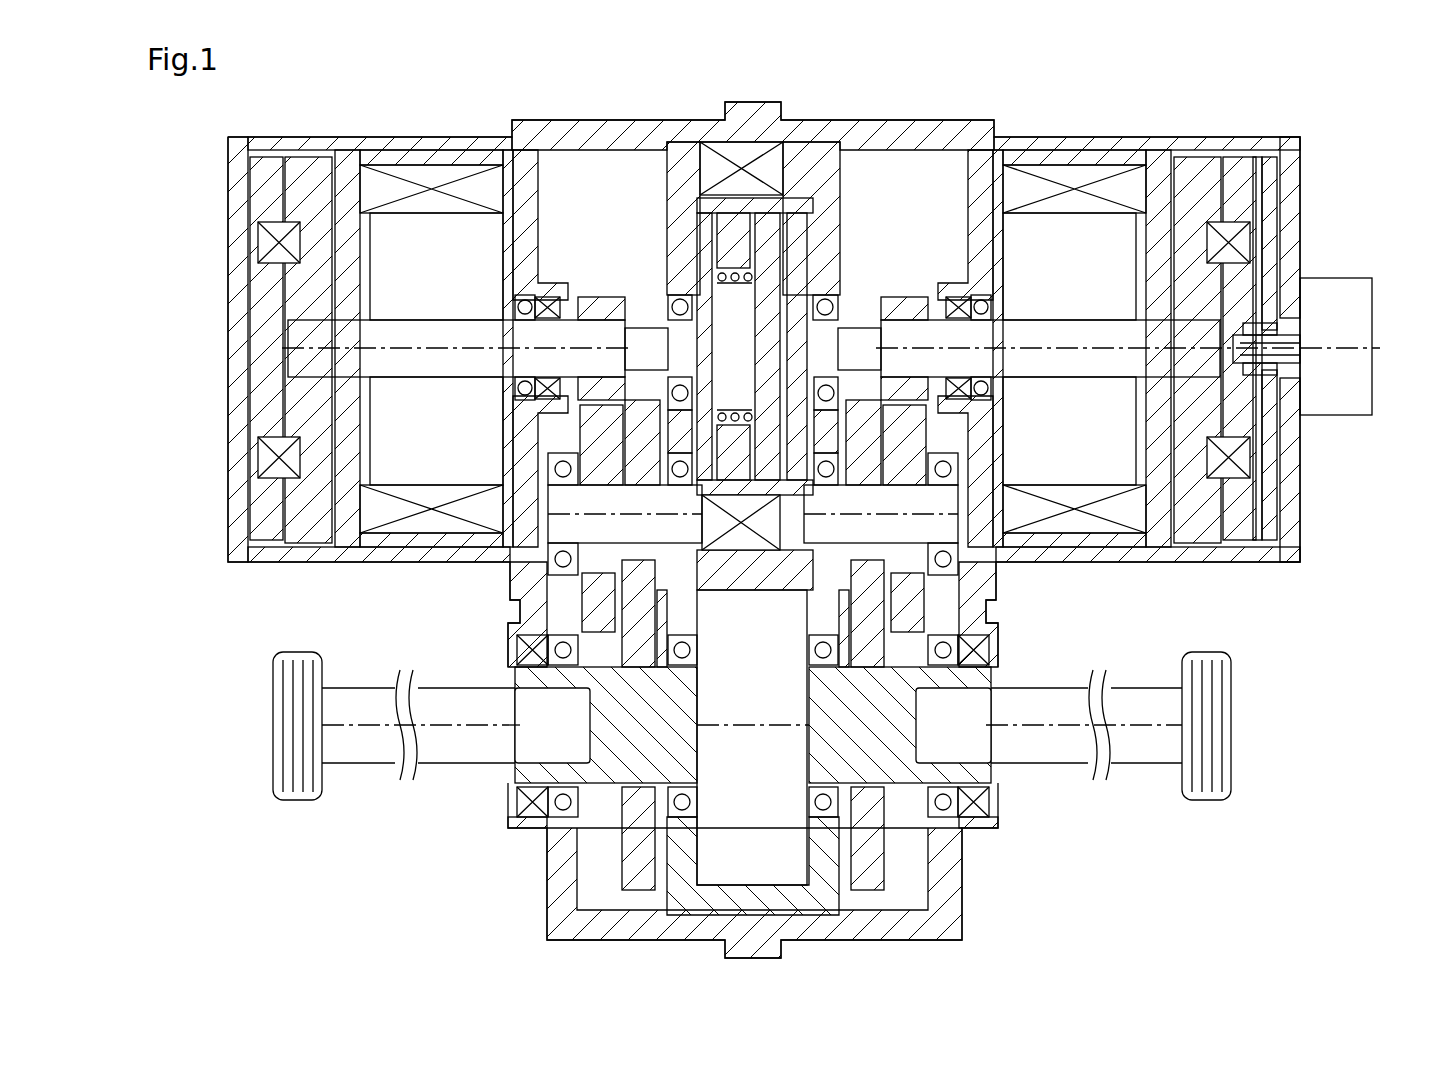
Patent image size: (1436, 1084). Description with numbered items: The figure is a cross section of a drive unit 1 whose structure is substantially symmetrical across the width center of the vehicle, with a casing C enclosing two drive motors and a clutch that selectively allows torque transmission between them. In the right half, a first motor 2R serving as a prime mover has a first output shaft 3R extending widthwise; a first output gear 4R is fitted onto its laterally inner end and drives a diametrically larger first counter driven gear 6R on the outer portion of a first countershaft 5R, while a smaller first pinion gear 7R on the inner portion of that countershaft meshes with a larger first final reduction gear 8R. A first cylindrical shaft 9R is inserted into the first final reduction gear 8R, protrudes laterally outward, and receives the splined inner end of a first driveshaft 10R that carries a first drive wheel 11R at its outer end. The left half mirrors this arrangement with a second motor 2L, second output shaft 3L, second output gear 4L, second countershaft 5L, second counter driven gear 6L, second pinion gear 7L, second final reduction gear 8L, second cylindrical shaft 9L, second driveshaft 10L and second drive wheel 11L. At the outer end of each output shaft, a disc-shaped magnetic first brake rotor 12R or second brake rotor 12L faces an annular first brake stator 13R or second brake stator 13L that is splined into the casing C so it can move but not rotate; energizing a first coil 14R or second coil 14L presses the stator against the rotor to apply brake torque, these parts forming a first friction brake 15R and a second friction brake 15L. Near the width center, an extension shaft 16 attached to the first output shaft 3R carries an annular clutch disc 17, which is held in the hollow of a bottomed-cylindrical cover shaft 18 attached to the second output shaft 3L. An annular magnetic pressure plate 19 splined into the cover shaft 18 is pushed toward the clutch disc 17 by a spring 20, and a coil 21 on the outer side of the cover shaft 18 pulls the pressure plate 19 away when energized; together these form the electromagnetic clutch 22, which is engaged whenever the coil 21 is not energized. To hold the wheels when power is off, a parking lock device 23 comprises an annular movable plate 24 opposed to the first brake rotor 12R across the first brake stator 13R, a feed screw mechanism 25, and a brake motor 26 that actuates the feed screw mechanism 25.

The drive unit 1 is at (385, 876).
The second motor 2L is at (437, 125).
The first motor 2R is at (1075, 126).
The second output shaft 3L is at (445, 318).
The first output shaft 3R is at (1068, 318).
The second output gear 4L is at (603, 298).
The first output gear 4R is at (905, 298).
The second countershaft 5L is at (565, 520).
The first countershaft 5R is at (940, 520).
The second counter driven gear 6L is at (590, 605).
The first counter driven gear 6R is at (905, 605).
The second pinion gear 7L is at (618, 460).
The first pinion gear 7R is at (868, 460).
The second final reduction gear 8L is at (628, 855).
The first final reduction gear 8R is at (878, 855).
The second cylindrical shaft 9L is at (510, 770).
The first cylindrical shaft 9R is at (980, 770).
The second driveshaft 10L is at (455, 696).
The first driveshaft 10R is at (1060, 696).
The second drive wheel 11L is at (297, 656).
The first drive wheel 11R is at (1205, 656).
The second brake rotor 12L is at (312, 163).
The first brake rotor 12R is at (1195, 158).
The second brake stator 13L is at (272, 160).
The first brake stator 13R is at (1240, 165).
The second coil 14L is at (262, 240).
The first coil 14R is at (1248, 235).
The second friction brake 15L is at (222, 316).
The first friction brake 15R is at (1300, 130).
The extension shaft 16 is at (805, 300).
The clutch disc 17 is at (790, 246).
The cover shaft 18 is at (690, 218).
The pressure plate 19 is at (760, 280).
The spring 20 is at (737, 403).
The coil 21 is at (725, 143).
The electromagnetic clutch 22 is at (875, 140).
The parking lock device 23 is at (1310, 460).
The movable plate 24 is at (1270, 535).
The feed screw mechanism 25 is at (1265, 285).
The brake motor 26 is at (1355, 328).
The casing C is at (862, 178).